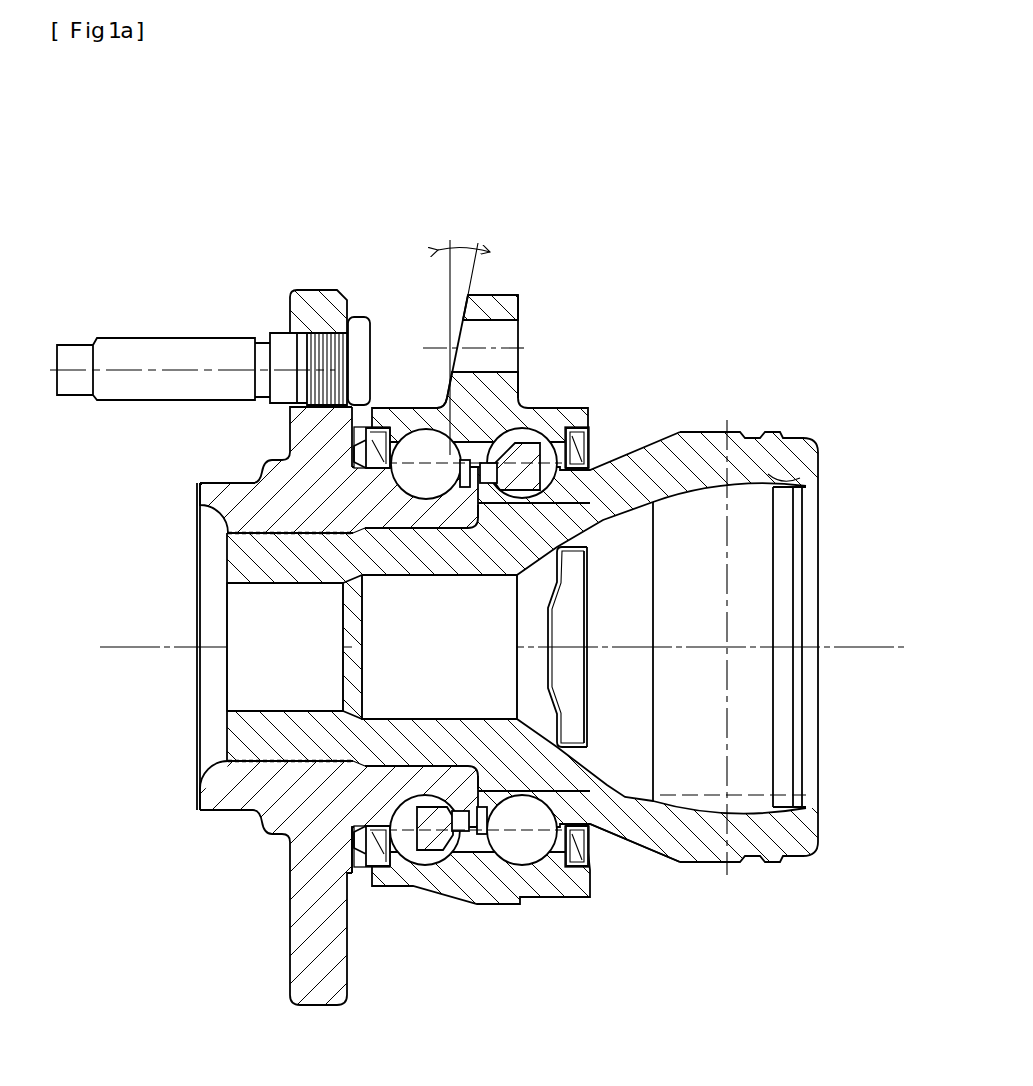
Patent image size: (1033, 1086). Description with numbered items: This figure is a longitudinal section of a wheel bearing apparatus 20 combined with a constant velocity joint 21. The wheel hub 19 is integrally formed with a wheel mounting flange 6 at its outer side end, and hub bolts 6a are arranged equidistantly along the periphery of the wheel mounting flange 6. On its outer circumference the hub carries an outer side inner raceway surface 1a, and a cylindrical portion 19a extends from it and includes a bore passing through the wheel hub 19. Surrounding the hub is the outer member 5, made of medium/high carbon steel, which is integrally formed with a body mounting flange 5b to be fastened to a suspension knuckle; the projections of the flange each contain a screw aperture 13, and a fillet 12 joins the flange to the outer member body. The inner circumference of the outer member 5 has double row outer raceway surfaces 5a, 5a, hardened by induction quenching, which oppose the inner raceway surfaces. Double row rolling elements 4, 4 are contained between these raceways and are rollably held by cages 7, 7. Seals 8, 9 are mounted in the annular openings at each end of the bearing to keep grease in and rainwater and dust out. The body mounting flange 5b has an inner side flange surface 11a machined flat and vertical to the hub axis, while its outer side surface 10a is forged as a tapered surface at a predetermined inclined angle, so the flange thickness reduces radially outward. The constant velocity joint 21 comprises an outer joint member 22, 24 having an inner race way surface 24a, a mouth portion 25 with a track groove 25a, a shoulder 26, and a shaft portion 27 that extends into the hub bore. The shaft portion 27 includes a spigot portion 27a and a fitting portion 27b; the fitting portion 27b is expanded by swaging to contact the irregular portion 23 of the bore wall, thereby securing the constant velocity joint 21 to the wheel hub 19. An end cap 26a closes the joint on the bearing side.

The outer side inner raceway surface 1a is at (352, 457).
The rolling elements 4 is at (445, 872).
The outer member 5 is at (516, 543).
The outer raceway surfaces 5a is at (430, 470).
The body mounting flange 5b is at (497, 292).
The wheel mounting flange 6 is at (316, 303).
The hub bolts 6a is at (150, 358).
The cages 7 is at (445, 772).
The seal 8 is at (340, 900).
The seal 9 is at (590, 842).
The outer side surface 10a is at (458, 333).
The inner side flange surface 11a is at (536, 345).
The fillet portion 12 is at (455, 412).
The screw aperture 13 is at (520, 340).
The wheel hub 19 is at (516, 543).
The cylindrical portion 19a is at (452, 512).
The wheel bearing 20 is at (516, 543).
The constant velocity joint 21 is at (516, 543).
The outer joint member 22 is at (243, 597).
The irregular portion 23 is at (245, 534).
The outer joint member 24 is at (627, 457).
The inner race way surface 24a is at (560, 592).
The mouth portion 25 is at (800, 443).
The track groove 25a is at (770, 478).
The shoulder 26 is at (572, 805).
The end cap 26a is at (585, 693).
The shaft portion 27 is at (372, 624).
The spigot portion 27a is at (410, 530).
The fitting portion 27b is at (333, 577).